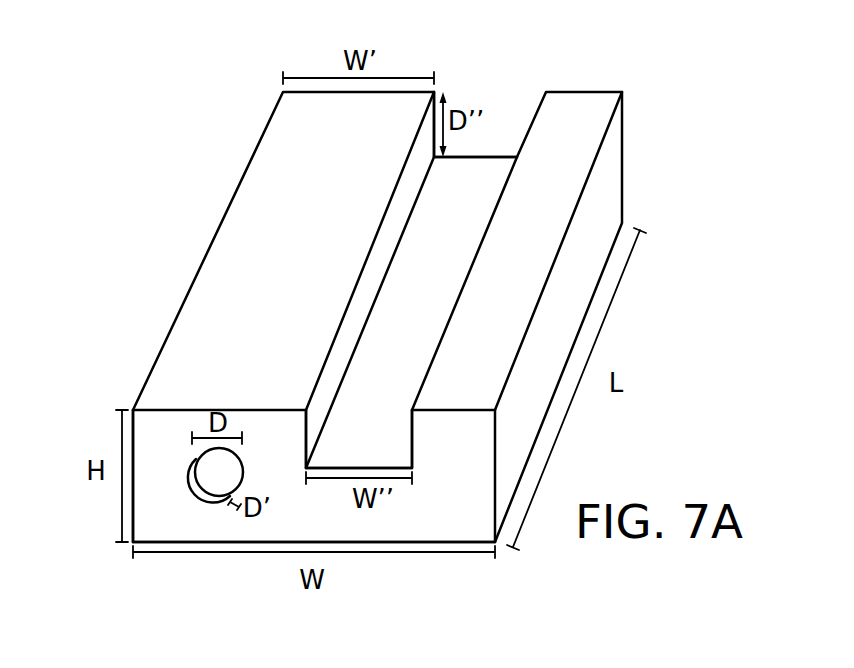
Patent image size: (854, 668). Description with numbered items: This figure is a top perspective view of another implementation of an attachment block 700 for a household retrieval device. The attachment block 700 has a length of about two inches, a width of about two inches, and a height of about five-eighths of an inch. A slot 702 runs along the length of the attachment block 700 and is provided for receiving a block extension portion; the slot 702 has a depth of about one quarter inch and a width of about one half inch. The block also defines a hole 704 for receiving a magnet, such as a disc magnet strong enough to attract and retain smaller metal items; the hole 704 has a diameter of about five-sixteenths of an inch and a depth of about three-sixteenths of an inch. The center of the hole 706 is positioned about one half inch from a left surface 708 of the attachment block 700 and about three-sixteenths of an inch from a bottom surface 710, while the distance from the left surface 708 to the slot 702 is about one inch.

The attachment block 700 is at (106, 240).
The slot 702 is at (498, 128).
The hole 704 is at (195, 458).
The center of the hole 706 is at (217, 472).
The left surface 708 is at (133, 505).
The bottom surface 710 is at (222, 546).